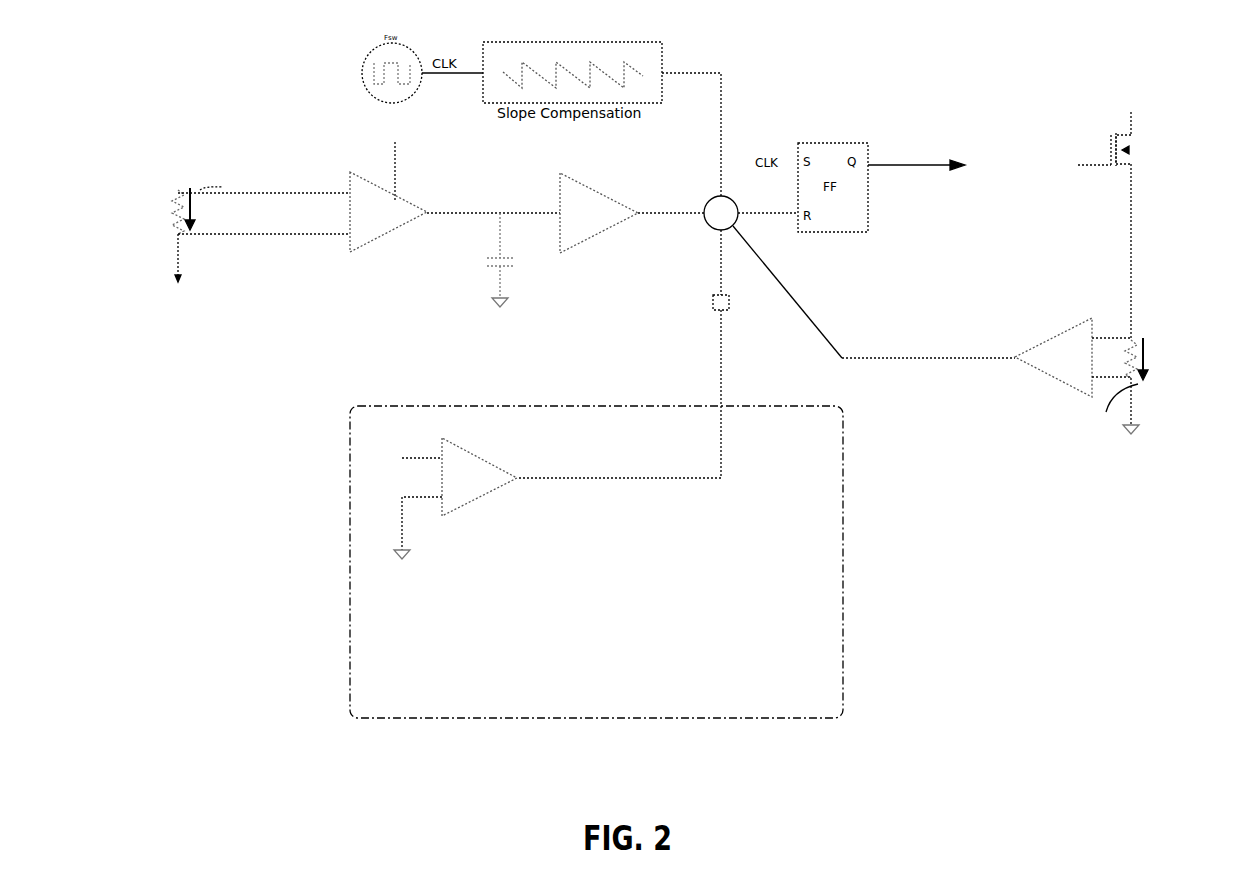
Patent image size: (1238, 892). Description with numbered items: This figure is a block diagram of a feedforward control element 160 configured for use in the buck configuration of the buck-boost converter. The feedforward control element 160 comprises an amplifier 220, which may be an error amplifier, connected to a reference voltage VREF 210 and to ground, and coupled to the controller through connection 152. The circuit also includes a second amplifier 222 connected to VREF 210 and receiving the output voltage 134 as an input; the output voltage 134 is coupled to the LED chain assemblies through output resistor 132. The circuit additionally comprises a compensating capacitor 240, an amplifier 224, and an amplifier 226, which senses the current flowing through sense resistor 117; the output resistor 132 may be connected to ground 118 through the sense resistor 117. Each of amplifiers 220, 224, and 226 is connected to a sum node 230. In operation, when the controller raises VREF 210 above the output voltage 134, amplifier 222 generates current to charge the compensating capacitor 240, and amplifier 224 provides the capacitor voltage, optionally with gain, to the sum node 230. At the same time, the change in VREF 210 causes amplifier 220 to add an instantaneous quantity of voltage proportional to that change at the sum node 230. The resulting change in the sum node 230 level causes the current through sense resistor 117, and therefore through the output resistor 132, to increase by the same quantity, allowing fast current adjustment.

The VREF 210 is at (381, 134).
The output resistor 132 is at (177, 240).
The output voltage 134 is at (183, 193).
The amplifier 222 is at (407, 200).
The compensating capacitor 240 is at (512, 268).
The amplifier 224 is at (606, 232).
The sum node 230 is at (708, 198).
The connection 152 is at (716, 311).
The amplifier 226 is at (1054, 380).
The sense resistor 117 is at (1130, 342).
The ground 118 is at (1135, 412).
The feedforward control element 160 is at (845, 572).
The amplifier 220 is at (505, 470).